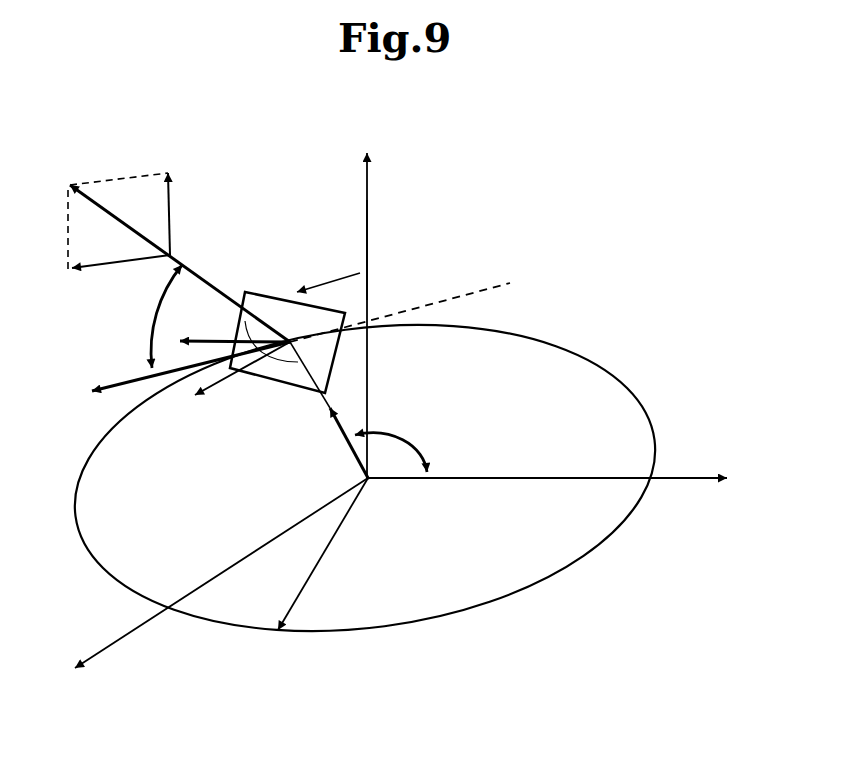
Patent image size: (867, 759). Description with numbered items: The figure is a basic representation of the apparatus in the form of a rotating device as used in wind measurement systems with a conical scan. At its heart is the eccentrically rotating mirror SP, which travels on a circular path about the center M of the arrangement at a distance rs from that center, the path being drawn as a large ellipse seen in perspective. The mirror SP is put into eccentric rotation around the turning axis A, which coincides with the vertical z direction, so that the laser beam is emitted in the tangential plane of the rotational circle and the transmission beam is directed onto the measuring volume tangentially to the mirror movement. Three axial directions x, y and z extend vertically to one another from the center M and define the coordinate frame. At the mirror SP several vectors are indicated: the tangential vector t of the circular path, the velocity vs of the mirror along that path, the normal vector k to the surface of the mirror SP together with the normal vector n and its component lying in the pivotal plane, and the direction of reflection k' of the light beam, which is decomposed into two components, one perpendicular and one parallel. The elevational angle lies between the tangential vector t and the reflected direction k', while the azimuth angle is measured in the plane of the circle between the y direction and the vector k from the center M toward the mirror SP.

The eccentrically rotating mirror SP is at (271, 307).
The turning axis A is at (369, 241).
The center of the arrangement M is at (373, 485).
The distance of the mirror from the center rs is at (323, 554).
The x axial direction x is at (213, 581).
The y axial direction y is at (555, 477).
The z axial direction z is at (363, 302).
The normal vector to the mirror surface k is at (329, 410).
The direction of reflection of the light beam k' is at (168, 256).
The normal vector component n is at (235, 367).
The tangential vector of the circular path t is at (184, 367).
The velocity vector of the mirror vs is at (329, 262).